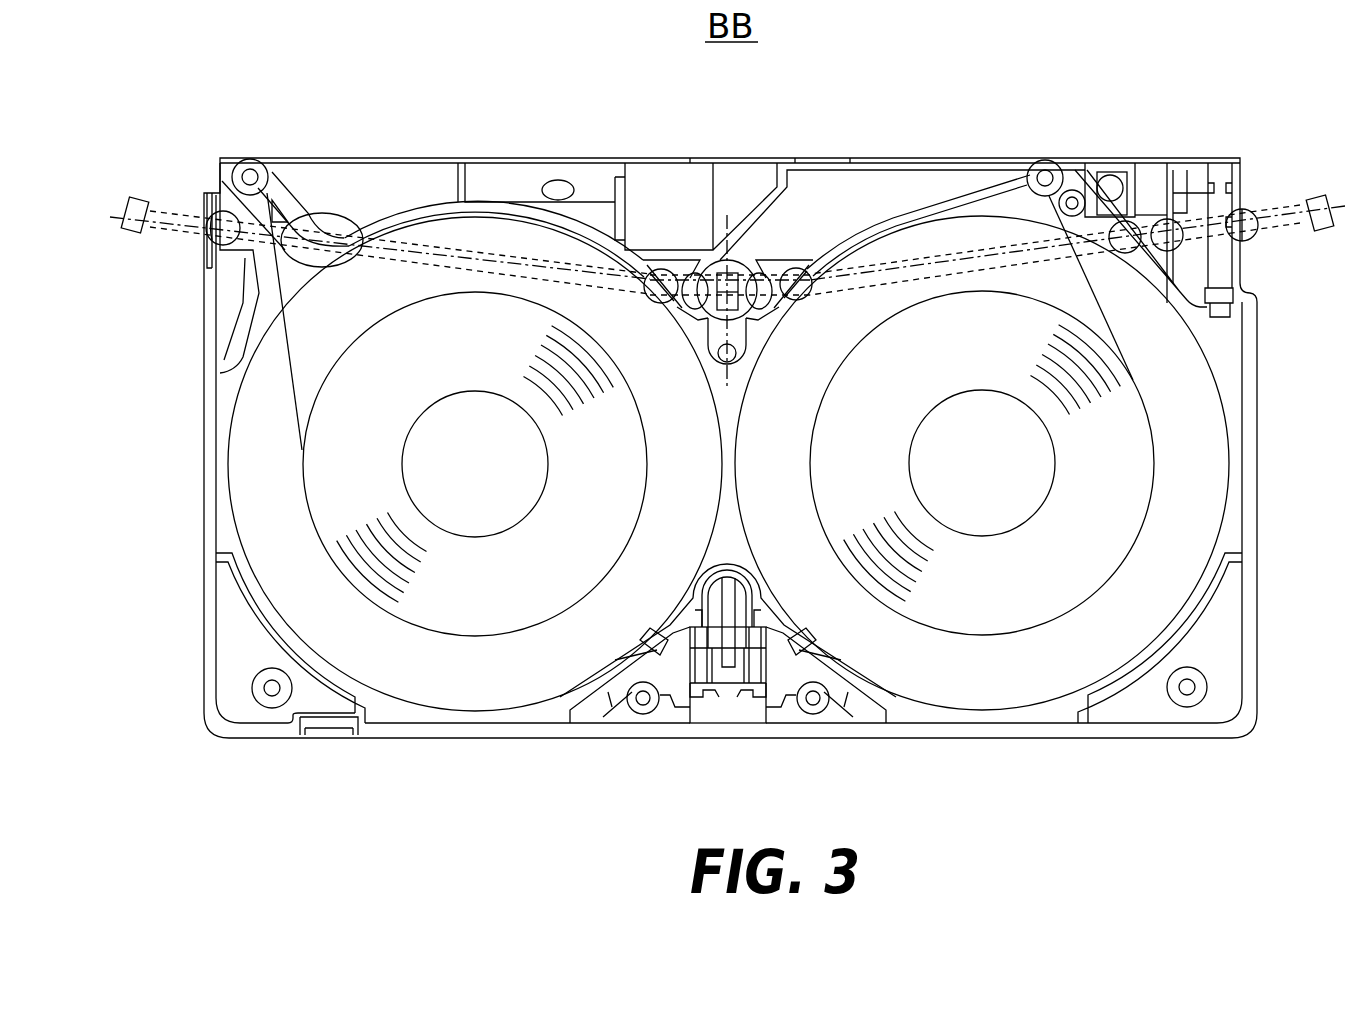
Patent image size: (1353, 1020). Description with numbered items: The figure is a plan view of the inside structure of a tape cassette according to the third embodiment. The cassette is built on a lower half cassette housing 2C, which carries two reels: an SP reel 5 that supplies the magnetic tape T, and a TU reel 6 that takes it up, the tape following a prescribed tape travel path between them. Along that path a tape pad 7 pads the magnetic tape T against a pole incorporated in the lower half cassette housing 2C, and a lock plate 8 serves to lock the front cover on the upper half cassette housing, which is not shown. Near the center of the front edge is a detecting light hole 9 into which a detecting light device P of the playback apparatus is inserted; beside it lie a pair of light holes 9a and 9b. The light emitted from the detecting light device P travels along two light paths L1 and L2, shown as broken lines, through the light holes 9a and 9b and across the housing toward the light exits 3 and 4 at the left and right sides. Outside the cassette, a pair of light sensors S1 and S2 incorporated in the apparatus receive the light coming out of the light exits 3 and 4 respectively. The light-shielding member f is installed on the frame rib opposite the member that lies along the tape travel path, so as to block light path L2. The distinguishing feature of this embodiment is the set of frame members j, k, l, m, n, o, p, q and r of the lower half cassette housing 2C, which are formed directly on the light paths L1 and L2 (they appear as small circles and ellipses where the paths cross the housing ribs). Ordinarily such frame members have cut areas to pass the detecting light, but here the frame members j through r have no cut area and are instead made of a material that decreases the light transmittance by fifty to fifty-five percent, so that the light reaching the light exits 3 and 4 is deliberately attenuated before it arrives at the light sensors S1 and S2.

The light exit 3 is at (205, 234).
The light exit 4 is at (1248, 238).
The SP reel 5 is at (460, 683).
The TU reel 6 is at (993, 685).
The tape pad 7 is at (292, 207).
The lock plate 8 is at (1225, 168).
The detecting light hole 9 is at (752, 260).
The light hole 9a is at (686, 276).
The light hole 9b is at (765, 268).
The lower half cassette housing 2C is at (730, 732).
The magnetic tape T is at (668, 158).
The detecting light device P is at (800, 248).
The light sensor S1 is at (140, 200).
The light sensor S2 is at (1326, 170).
The light path L1 is at (435, 245).
The light path L2 is at (975, 250).
The light-shielding member f is at (1145, 215).
The frame member j is at (690, 312).
The frame member k is at (655, 305).
The frame member l is at (340, 224).
The frame member m is at (212, 242).
The frame member n is at (772, 312).
The frame member o is at (800, 305).
The frame member p is at (1132, 256).
The frame member q is at (1183, 257).
The frame member r is at (1254, 238).